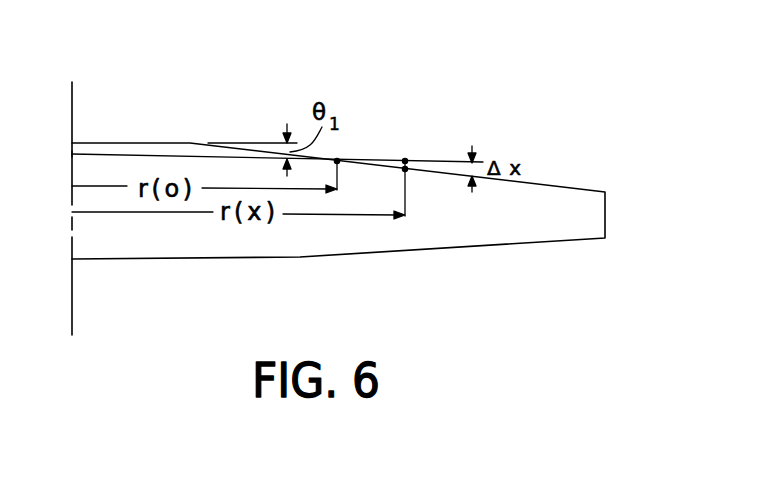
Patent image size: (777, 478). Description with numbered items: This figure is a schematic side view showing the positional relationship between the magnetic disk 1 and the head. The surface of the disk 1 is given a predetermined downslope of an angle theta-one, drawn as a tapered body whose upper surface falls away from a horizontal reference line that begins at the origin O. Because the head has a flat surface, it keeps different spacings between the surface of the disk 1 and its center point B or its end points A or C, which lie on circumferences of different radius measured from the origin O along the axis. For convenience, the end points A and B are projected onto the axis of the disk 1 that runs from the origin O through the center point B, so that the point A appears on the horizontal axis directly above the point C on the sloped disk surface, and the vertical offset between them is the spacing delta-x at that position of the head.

The disk 1 is at (590, 185).
The origin of the 0B axis O is at (58, 157).
The end point of head A is at (407, 160).
The center point of head B is at (338, 160).
The end point of head C is at (439, 130).